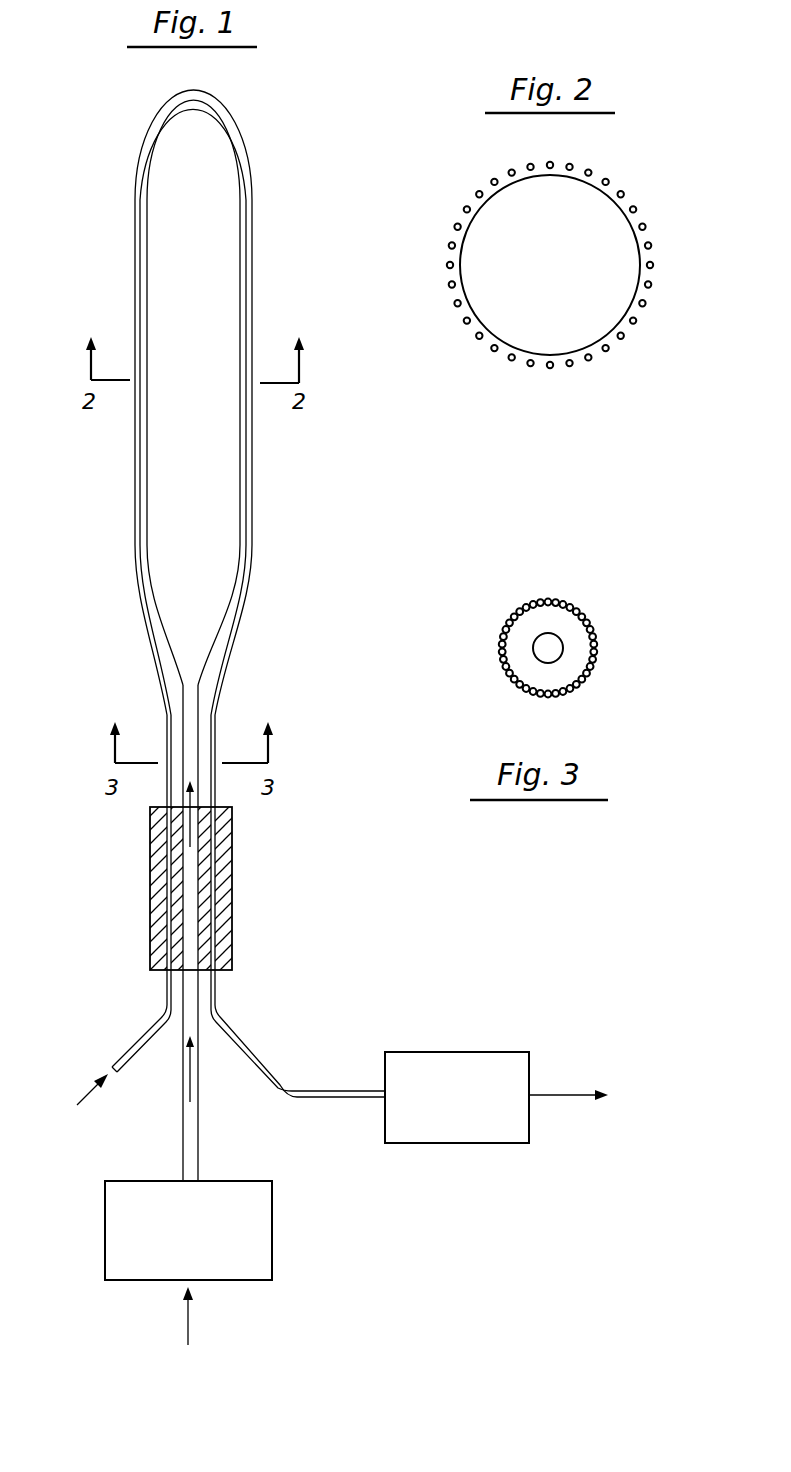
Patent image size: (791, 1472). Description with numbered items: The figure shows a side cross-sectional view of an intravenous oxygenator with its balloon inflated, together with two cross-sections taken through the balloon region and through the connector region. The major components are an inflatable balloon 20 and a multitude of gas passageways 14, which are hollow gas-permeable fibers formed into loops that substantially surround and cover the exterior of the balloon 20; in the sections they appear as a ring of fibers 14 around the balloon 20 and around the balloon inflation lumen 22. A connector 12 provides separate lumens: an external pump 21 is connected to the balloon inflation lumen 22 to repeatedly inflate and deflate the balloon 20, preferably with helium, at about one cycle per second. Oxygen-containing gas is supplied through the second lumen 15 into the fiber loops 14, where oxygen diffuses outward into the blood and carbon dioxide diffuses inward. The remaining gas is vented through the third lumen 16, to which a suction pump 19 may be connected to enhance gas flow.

In FIG. 1, the connector 12 is at (150, 880).
In FIG. 1, the gas passageways 14 is at (137, 248).
In FIG. 2, the gas passageways 14 is at (646, 230).
In FIG. 3, the gas passageways 14 is at (596, 645).
In FIG. 1, the second lumen 15 is at (140, 1034).
In FIG. 1, the third lumen 16 is at (242, 1048).
In FIG. 1, the suction pump 19 is at (454, 1052).
In FIG. 1, the inflatable balloon 20 is at (243, 256).
In FIG. 2, the inflatable balloon 20 is at (637, 244).
In FIG. 1, the external pump 21 is at (105, 1218).
In FIG. 1, the balloon inflation lumen 22 is at (183, 705).
In FIG. 3, the balloon inflation lumen 22 is at (533, 648).